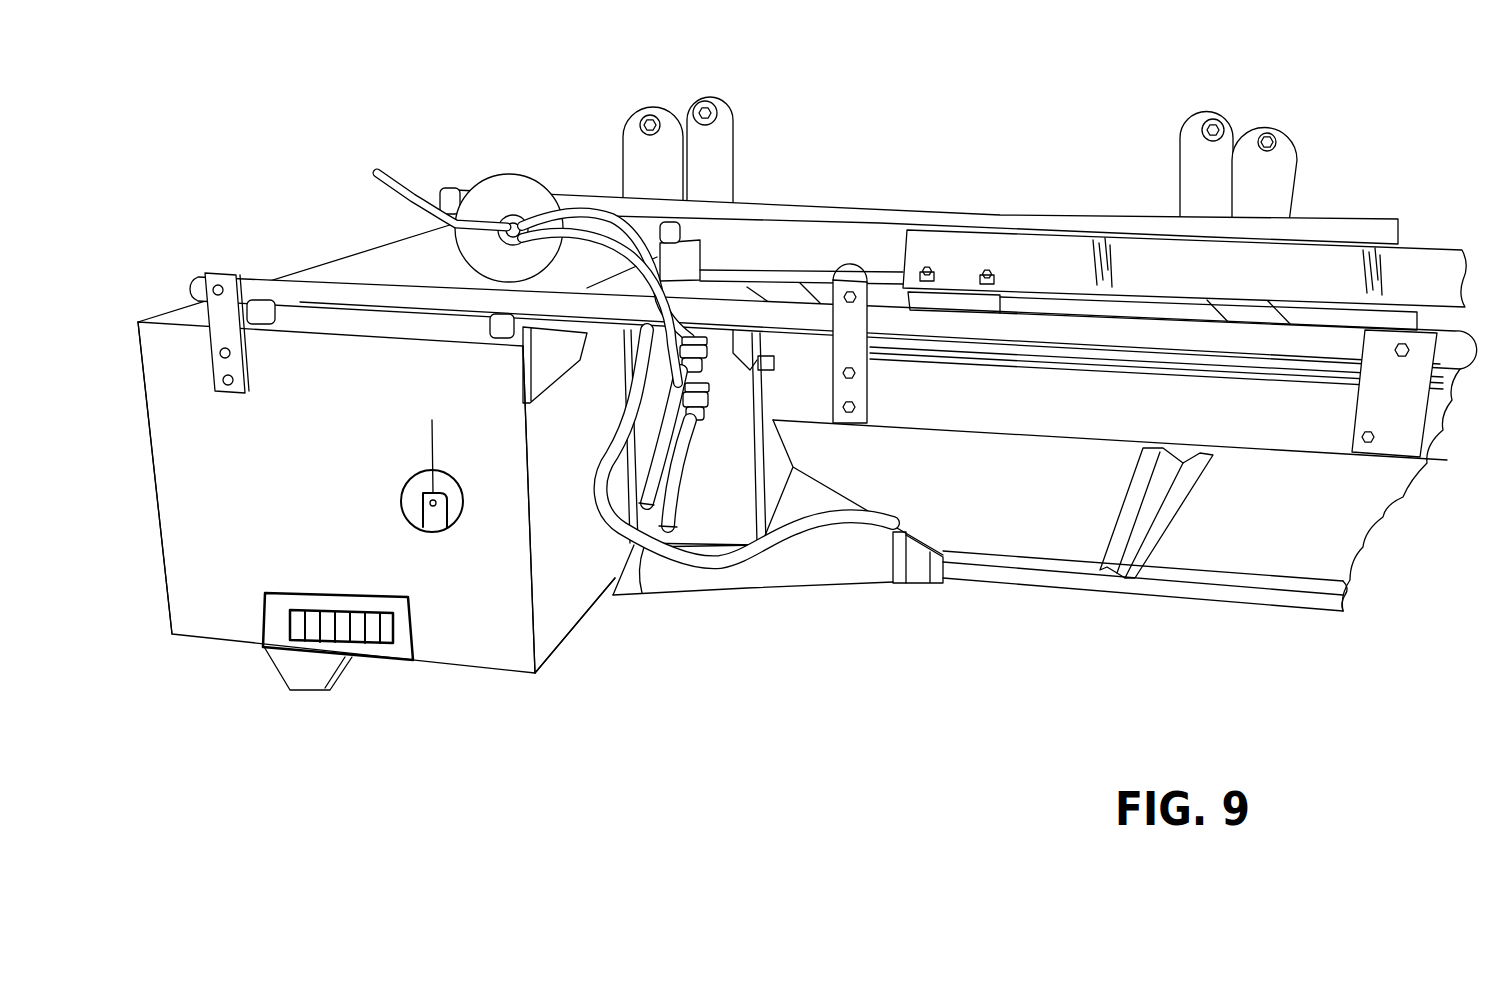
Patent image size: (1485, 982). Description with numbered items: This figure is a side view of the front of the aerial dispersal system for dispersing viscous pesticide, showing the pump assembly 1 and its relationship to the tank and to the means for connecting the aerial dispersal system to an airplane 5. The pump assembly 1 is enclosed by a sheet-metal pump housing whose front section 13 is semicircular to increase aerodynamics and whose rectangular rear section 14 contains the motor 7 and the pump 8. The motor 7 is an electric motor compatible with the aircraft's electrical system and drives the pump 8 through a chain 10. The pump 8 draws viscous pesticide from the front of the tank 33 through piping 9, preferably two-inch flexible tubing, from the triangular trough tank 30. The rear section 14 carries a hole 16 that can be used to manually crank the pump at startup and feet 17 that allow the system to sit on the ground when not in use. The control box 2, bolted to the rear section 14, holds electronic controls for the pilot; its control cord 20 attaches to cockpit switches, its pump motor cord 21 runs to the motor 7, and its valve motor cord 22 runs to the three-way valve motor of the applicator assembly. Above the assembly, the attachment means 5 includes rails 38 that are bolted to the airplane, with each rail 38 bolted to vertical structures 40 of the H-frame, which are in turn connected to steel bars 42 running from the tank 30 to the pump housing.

The pump assembly 1 is at (328, 503).
The control box 2 is at (717, 488).
The means for connecting the aerial dispersal system to an airplane 5 is at (1027, 284).
The motor 7 is at (395, 620).
The pump 8 is at (432, 445).
The piping 9 is at (845, 572).
The chain 10 is at (455, 507).
The front section of the pump housing 13 is at (152, 481).
The rear section of the pump housing 14 is at (577, 579).
The hole 16 is at (453, 477).
The feet 17 is at (300, 667).
The control cord 20 is at (393, 200).
The pump motor cord 21 is at (680, 377).
The valve motor cord 22 is at (677, 445).
The tank 30 is at (1018, 513).
The front of the tank 33 is at (823, 470).
The rails 38 is at (760, 212).
The vertical structures 40 is at (717, 97).
The steel bars 42 is at (218, 332).